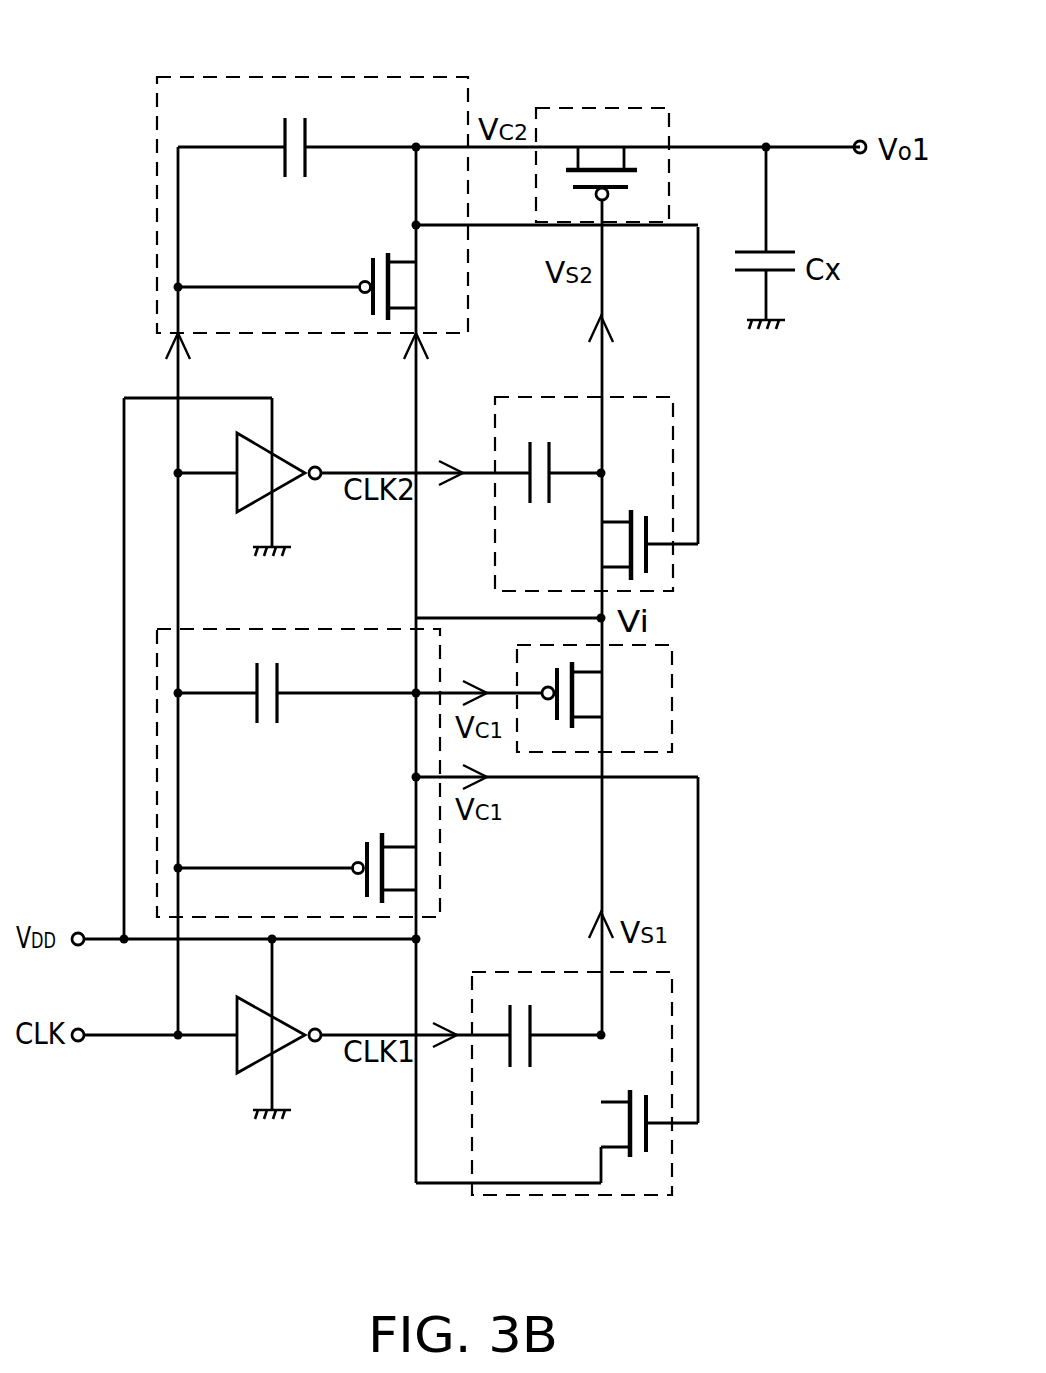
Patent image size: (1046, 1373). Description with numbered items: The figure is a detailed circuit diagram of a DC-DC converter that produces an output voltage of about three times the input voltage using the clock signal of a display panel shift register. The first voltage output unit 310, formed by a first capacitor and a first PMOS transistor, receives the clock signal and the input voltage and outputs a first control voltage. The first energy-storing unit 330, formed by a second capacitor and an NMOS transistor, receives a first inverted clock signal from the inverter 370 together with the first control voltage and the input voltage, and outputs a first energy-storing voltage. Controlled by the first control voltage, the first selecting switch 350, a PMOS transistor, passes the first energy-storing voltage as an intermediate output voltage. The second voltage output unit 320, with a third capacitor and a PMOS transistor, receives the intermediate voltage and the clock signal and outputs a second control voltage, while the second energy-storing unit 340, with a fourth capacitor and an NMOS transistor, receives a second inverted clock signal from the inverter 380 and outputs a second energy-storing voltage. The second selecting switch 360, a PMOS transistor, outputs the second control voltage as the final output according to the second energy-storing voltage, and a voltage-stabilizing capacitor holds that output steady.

The first voltage output unit 310 is at (157, 778).
The second voltage output unit 320 is at (312, 77).
The first energy-storing unit 330 is at (630, 1195).
The second energy-storing unit 340 is at (673, 493).
The first selecting switch 350 is at (672, 700).
The second selecting switch 360 is at (600, 107).
The inverter 370 is at (237, 1055).
The inverter 380 is at (285, 458).